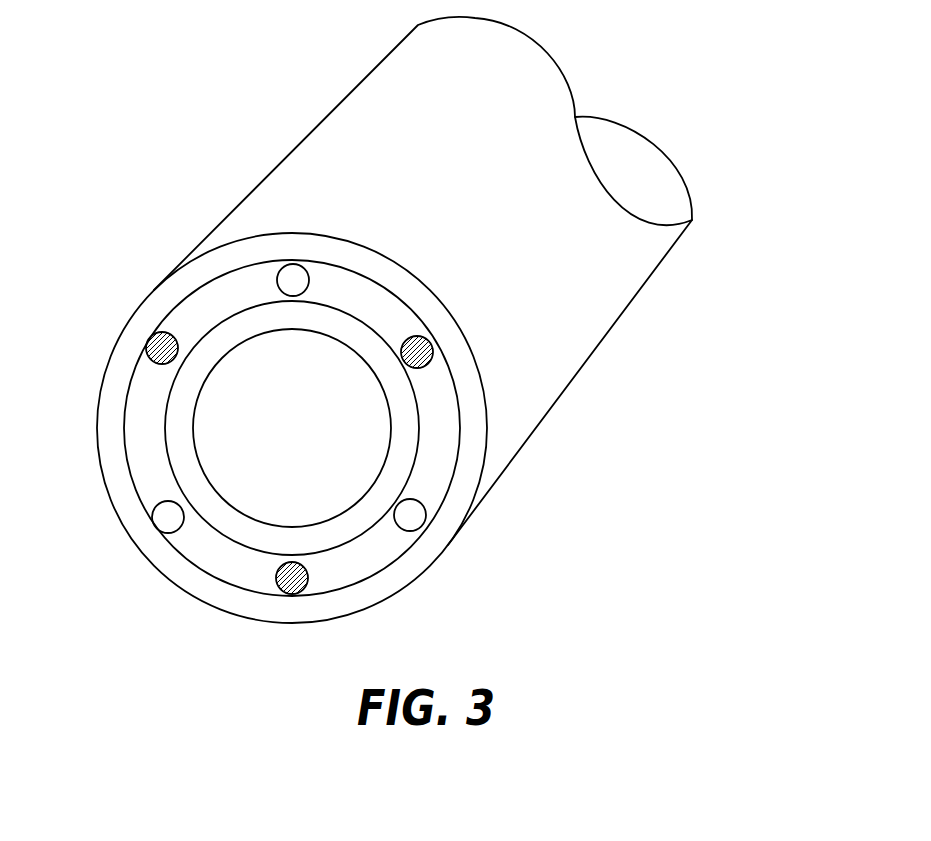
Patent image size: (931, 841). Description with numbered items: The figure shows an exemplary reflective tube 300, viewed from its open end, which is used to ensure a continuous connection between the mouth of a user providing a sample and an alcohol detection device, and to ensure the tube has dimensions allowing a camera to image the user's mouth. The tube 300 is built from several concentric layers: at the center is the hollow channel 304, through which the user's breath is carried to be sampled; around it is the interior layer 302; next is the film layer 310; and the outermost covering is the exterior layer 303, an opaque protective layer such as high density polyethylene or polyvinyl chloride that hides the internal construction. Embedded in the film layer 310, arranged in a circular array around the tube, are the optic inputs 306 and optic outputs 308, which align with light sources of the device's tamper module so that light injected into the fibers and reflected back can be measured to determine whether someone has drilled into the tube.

The reflective tube 300 is at (678, 68).
The interior layer 302 is at (222, 337).
The exterior layer 303 is at (215, 588).
The hollow channel 304 is at (213, 432).
The optic inputs 306 is at (163, 523).
The optic outputs 308 is at (293, 590).
The film layer 310 is at (357, 566).